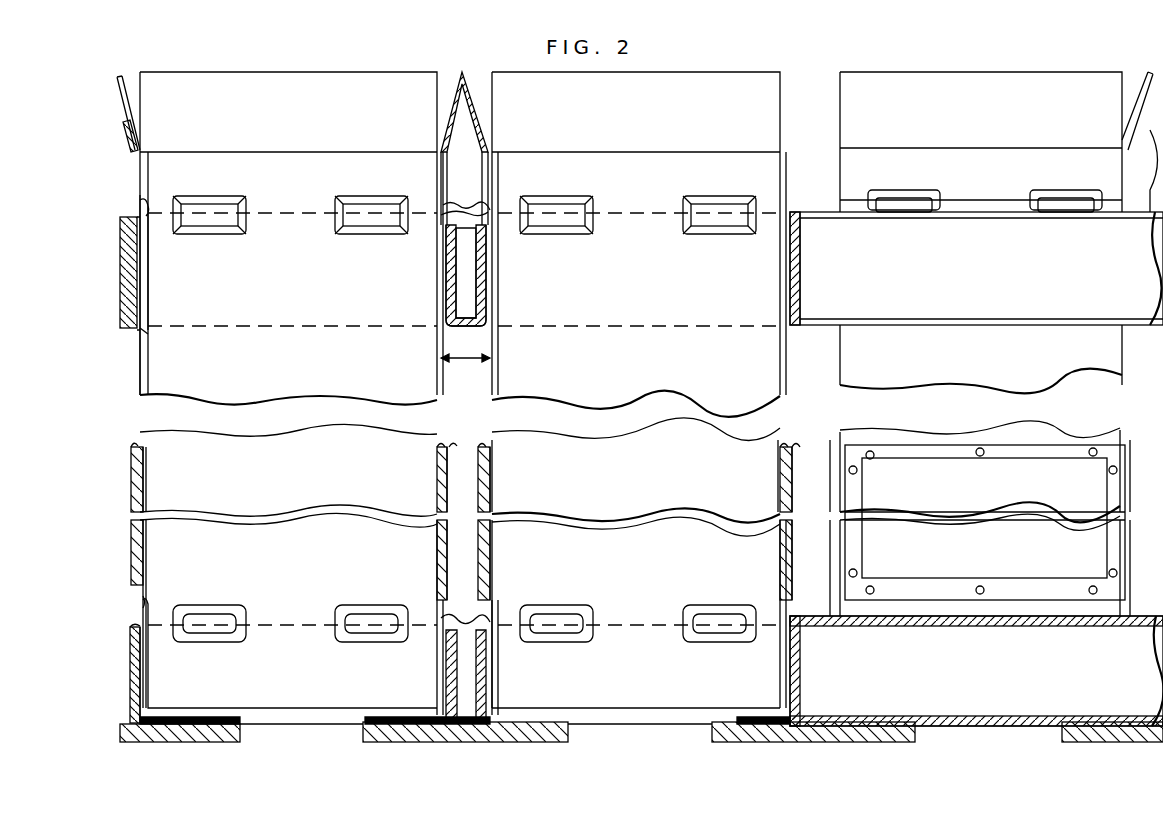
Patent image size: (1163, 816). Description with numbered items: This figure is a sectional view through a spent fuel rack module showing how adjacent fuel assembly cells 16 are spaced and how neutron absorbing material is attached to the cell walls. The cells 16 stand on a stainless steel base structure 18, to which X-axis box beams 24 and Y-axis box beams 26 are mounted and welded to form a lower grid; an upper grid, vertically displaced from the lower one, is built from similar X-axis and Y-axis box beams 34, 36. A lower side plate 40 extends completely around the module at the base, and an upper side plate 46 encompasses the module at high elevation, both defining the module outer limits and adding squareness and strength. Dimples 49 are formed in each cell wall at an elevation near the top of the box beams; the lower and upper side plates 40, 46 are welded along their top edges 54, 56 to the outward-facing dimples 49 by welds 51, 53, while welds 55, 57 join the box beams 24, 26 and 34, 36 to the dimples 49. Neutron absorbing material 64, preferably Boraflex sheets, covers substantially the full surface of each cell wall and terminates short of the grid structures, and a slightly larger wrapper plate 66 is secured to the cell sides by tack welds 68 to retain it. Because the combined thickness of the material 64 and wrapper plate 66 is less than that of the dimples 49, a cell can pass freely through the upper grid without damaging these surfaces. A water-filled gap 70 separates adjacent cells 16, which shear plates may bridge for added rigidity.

The cell 16 is at (141, 378).
The base structure 18 is at (372, 740).
The X-axis box beam 24 is at (812, 616).
The Y-axis box beam 26 is at (446, 690).
The X-axis box beam 34 is at (128, 78).
The Y-axis box beam 36 is at (446, 262).
The lower side plate 40 is at (130, 662).
The upper side plate 46 is at (123, 318).
The dimple 49 is at (158, 206).
The weld 51 is at (140, 626).
The weld 53 is at (126, 210).
The top edge 54 is at (122, 214).
The weld 55 is at (442, 640).
The top edge 56 is at (132, 628).
The weld 57 is at (466, 214).
The neutron absorbing material 64 is at (146, 478).
The wrapper plate 66 is at (132, 470).
The tack weld 68 is at (976, 456).
The gap 70 is at (466, 358).